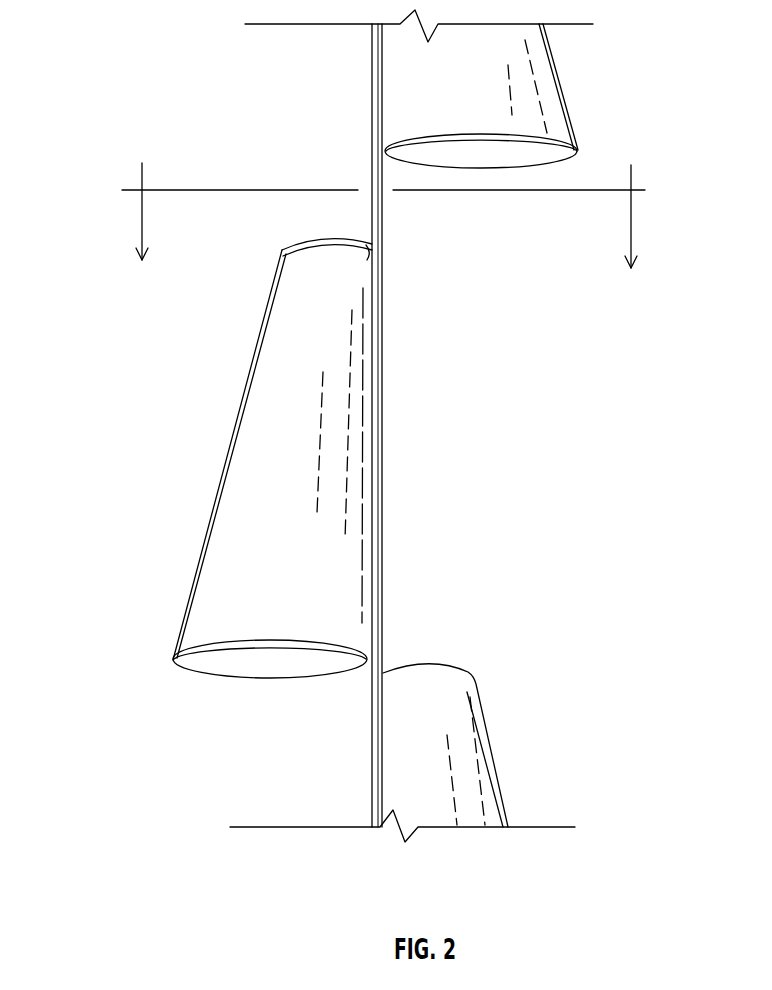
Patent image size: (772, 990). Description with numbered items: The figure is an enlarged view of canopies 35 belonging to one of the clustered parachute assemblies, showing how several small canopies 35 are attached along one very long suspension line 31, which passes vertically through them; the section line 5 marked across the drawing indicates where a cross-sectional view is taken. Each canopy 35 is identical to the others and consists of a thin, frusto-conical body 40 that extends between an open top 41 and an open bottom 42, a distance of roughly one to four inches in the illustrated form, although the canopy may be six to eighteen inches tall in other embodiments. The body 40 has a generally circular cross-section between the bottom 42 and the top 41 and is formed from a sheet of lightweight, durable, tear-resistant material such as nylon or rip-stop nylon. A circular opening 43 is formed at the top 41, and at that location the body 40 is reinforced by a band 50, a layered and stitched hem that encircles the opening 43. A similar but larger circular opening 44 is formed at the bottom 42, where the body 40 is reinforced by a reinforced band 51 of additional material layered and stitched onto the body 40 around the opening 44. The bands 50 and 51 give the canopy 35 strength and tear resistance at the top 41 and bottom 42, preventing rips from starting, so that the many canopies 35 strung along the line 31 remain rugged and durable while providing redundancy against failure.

The section line 5- 5 is at (381, 213).
The suspension line 31 is at (371, 168).
The canopy 35 is at (566, 98).
The frusto-conical body 40 is at (258, 470).
The open top 41 is at (283, 250).
The open bottom 42 is at (173, 662).
The circular opening 43 is at (344, 233).
The circular opening 44 is at (292, 660).
The band 50 is at (370, 252).
The reinforced band 51 is at (370, 655).